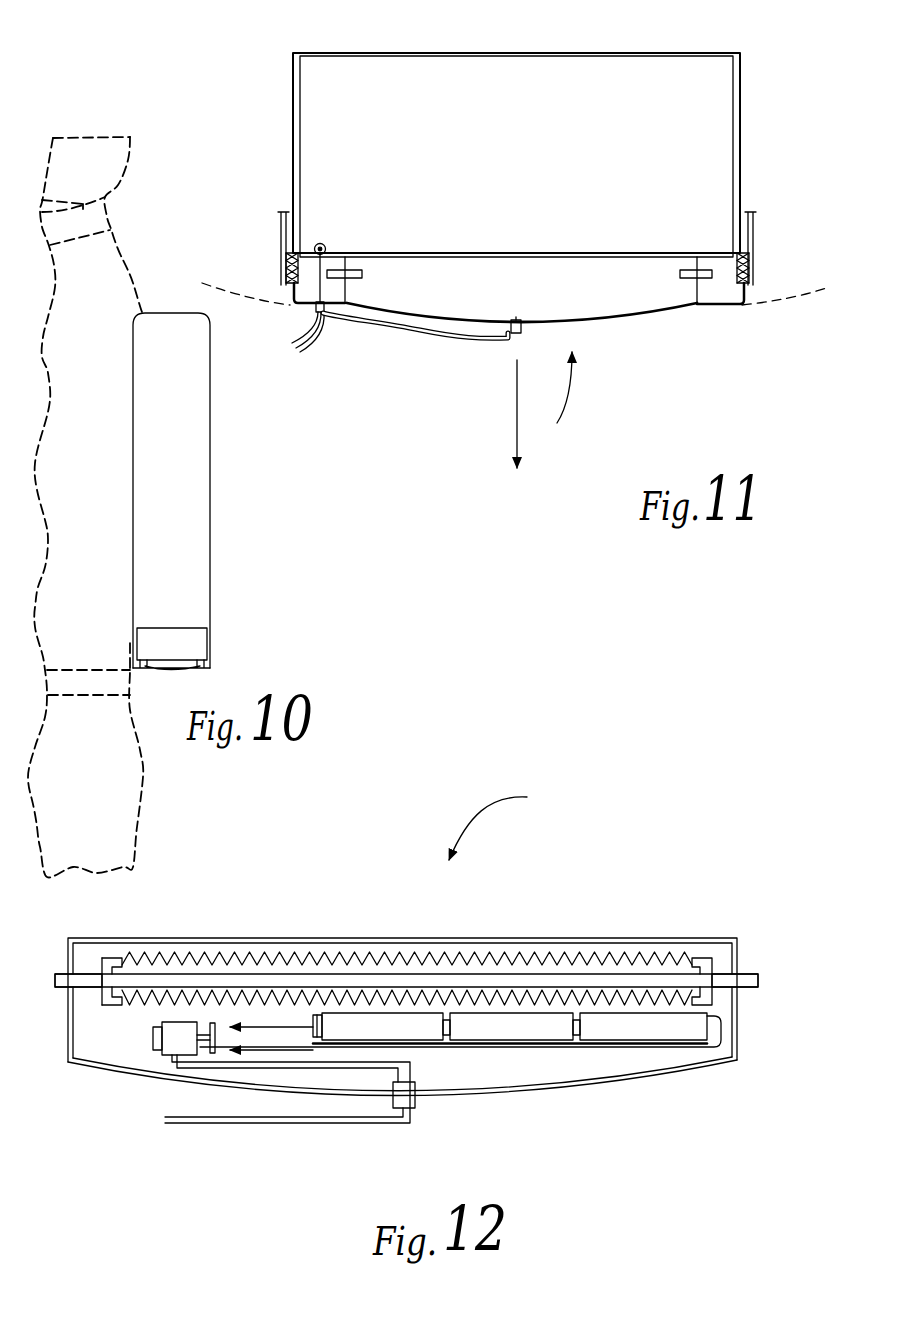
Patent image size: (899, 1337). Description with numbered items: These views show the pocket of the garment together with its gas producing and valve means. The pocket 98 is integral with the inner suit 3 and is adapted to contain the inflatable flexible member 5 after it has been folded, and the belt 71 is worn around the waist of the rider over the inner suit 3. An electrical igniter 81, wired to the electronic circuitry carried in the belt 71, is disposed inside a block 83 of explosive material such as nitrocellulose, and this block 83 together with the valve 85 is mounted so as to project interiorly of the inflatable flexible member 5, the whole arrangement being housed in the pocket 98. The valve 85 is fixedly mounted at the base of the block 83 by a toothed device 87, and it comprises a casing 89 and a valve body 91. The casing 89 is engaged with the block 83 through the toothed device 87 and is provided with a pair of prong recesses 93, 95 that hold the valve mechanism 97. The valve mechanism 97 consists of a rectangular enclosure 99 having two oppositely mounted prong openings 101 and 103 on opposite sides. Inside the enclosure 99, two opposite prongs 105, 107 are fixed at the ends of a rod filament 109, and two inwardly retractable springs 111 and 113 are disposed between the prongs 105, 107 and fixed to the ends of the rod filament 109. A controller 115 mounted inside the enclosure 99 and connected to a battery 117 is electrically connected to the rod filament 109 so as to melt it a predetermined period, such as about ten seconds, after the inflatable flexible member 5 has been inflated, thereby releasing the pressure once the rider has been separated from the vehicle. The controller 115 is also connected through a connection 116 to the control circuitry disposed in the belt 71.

In FIG. 11, the inner suit 3 is at (803, 297).
In FIG. 10, the inflatable flexible member 5 is at (143, 798).
In FIG. 10, the belt 71 is at (88, 687).
In FIG. 11, the electrical igniter 81 is at (324, 245).
In FIG. 10, the block of explosive material 83 is at (190, 643).
In FIG. 11, the block of explosive material 83 is at (632, 98).
In FIG. 11, the valve 85 is at (640, 321).
In FIG. 11, the toothed device 87 is at (288, 264).
In FIG. 11, the casing 89 is at (307, 292).
In FIG. 11, the valve body 91 is at (480, 294).
In FIG. 12, the valve body 91 is at (540, 1052).
In FIG. 11, the prong recess 93 is at (683, 271).
In FIG. 11, the prong recess 95 is at (367, 272).
In FIG. 11, the valve mechanism 97 is at (544, 410).
In FIG. 12, the valve mechanism 97 is at (507, 821).
In FIG. 10, the pocket 98 is at (193, 448).
In FIG. 12, the rectangular enclosure 99 is at (507, 938).
In FIG. 12, the prong opening 101 is at (73, 975).
In FIG. 12, the prong opening 103 is at (748, 974).
In FIG. 12, the prong 105 is at (60, 988).
In FIG. 12, the prong 107 is at (750, 987).
In FIG. 12, the rod filament 109 is at (327, 972).
In FIG. 12, the inwardly retractable spring 111 is at (157, 1003).
In FIG. 12, the inwardly retractable spring 113 is at (240, 960).
In FIG. 12, the controller 115 is at (182, 1038).
In FIG. 12, the connection 116 is at (273, 1068).
In FIG. 12, the battery 117 is at (620, 1028).